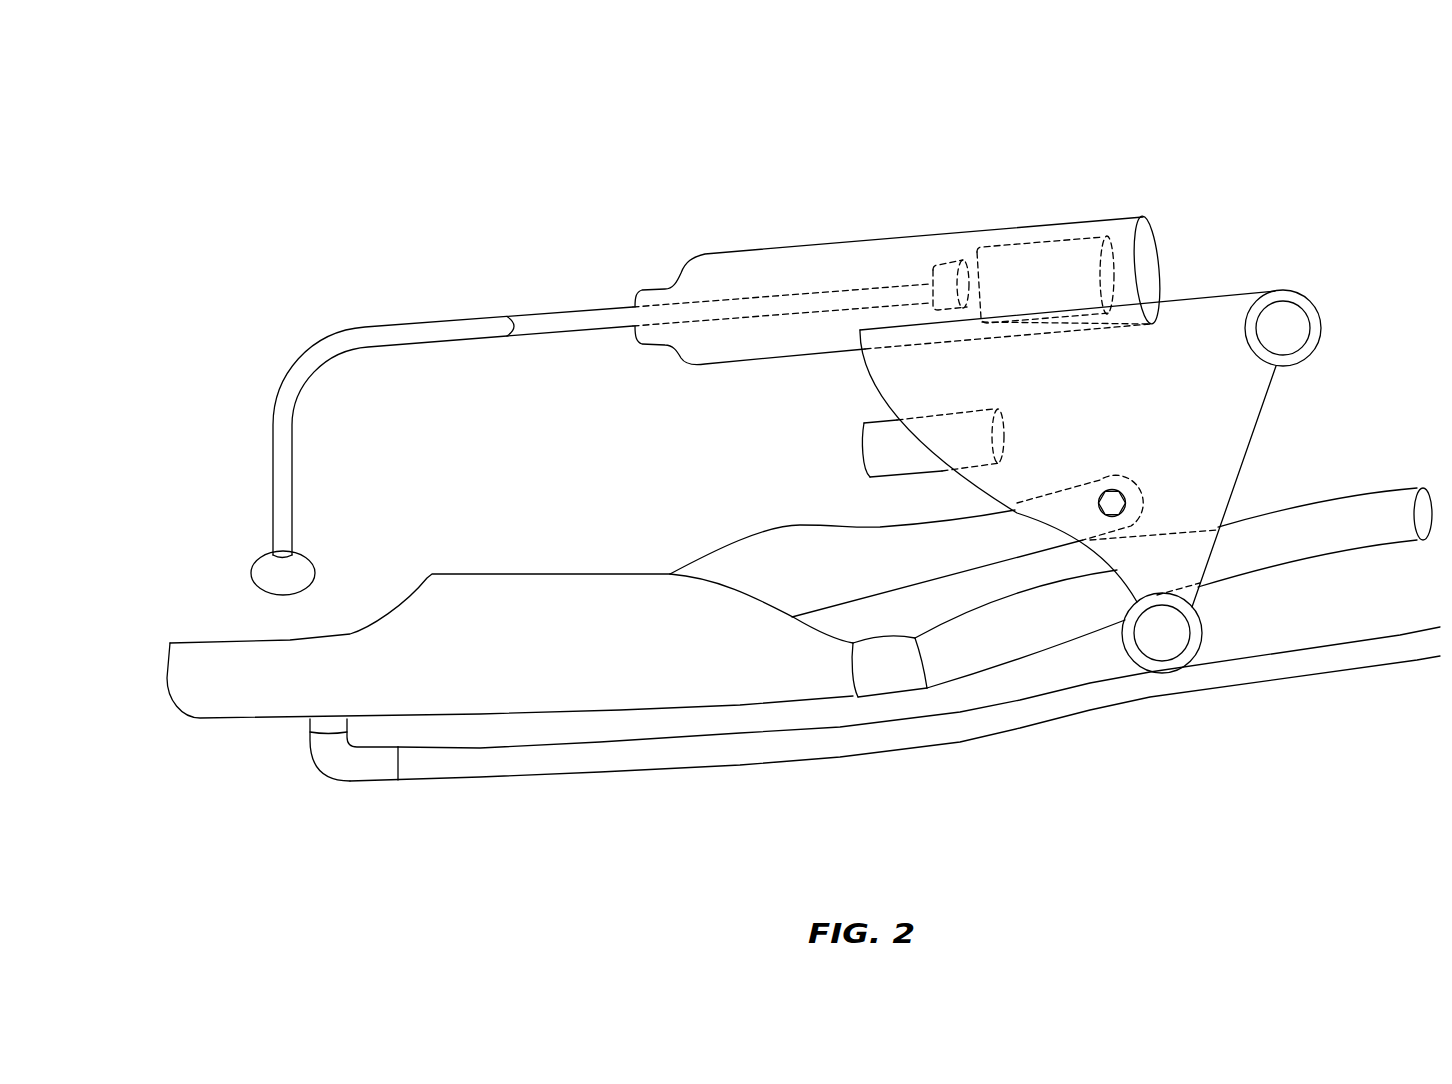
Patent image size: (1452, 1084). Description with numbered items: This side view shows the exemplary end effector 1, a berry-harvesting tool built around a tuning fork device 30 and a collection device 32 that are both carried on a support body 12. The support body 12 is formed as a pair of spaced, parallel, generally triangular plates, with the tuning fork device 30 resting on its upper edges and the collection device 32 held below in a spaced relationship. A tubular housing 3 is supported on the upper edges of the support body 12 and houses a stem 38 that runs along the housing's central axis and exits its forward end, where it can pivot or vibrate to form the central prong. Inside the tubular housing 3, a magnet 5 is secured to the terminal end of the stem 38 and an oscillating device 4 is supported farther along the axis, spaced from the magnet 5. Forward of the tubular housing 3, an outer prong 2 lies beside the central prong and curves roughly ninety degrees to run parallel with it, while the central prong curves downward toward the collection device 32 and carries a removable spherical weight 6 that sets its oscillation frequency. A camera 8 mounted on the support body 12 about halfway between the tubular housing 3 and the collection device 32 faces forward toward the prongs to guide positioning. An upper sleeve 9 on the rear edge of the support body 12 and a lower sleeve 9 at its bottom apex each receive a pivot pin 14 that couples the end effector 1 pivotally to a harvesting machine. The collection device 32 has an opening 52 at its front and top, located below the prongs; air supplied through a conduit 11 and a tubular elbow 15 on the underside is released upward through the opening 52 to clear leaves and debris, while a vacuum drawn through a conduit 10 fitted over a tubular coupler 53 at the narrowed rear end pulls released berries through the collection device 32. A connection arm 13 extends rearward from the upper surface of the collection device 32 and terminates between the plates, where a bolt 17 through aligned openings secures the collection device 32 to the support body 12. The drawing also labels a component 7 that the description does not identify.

The end effector 1 is at (1320, 118).
The prong 2 is at (418, 322).
The tubular housing 3 is at (866, 240).
The oscillating device 4 is at (1060, 252).
The magnet 5 is at (948, 256).
The weight 6 is at (312, 556).
The handle member 7 is at (538, 569).
The camera 8 is at (850, 459).
The sleeve 9 is at (1288, 292).
The conduit 10 is at (1255, 509).
The conduit 11 is at (682, 783).
The support body 12 is at (1205, 377).
The connection arm 13 is at (858, 576).
The pivot pin 14 is at (1283, 329).
The tubular elbow 15 is at (347, 765).
The bolt 17 is at (1112, 503).
The tuning fork device 30 is at (768, 196).
The collection device 32 is at (1005, 754).
The stem 38 is at (730, 297).
The opening 52 is at (215, 632).
The tubular coupler 53 is at (890, 672).